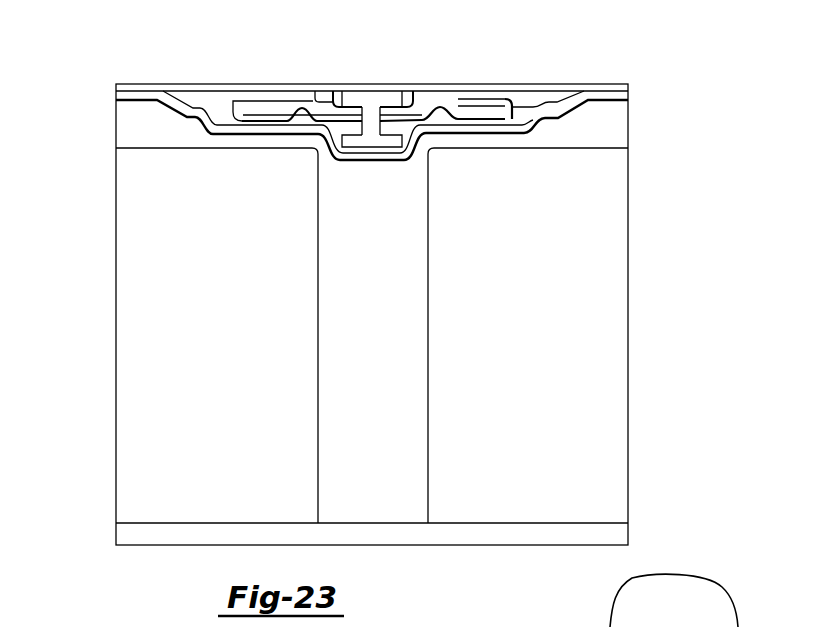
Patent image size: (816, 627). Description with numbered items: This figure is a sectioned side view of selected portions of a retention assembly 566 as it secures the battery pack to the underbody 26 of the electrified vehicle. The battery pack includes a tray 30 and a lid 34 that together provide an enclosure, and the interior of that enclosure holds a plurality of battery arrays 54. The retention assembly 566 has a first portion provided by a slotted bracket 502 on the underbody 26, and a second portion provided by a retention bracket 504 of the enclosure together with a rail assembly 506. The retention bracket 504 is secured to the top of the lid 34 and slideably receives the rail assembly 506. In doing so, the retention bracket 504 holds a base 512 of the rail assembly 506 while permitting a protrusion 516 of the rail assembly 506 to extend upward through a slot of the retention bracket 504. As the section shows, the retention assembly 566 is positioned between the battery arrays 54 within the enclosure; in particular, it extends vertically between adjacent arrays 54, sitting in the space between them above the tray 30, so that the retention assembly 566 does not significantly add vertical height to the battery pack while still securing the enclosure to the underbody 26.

The underbody 26 is at (566, 84).
The tray 30 is at (178, 528).
The lid 34 is at (133, 97).
The battery arrays 54 is at (147, 281).
The slotted bracket 502 is at (317, 92).
The retention bracket 504 is at (257, 106).
The rail assembly 506 is at (372, 115).
The base 512 is at (366, 148).
The protrusion 516 is at (387, 100).
The retention assembly 566 is at (450, 103).